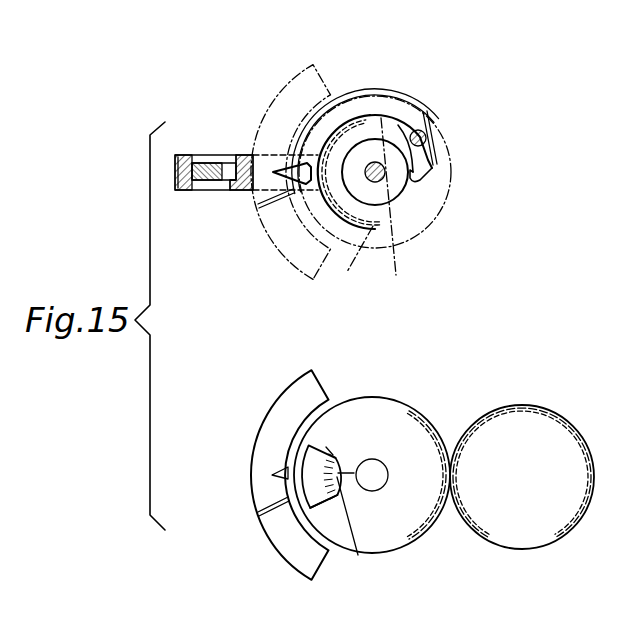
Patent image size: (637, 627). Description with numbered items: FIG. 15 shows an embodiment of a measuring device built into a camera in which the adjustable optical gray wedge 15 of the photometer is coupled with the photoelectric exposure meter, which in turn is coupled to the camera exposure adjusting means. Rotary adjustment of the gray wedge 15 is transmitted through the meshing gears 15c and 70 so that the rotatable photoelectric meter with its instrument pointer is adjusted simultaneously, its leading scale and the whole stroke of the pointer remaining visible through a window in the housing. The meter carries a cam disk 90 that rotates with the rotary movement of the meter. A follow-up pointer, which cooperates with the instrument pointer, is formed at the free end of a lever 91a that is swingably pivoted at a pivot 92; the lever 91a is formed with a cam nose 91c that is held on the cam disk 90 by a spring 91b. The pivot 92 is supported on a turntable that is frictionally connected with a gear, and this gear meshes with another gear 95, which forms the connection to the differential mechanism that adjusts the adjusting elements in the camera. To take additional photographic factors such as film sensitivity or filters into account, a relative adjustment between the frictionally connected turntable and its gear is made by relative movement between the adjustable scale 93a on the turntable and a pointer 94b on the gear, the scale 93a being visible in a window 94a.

The gray wedge 15 is at (220, 172).
The gear 15c is at (243, 150).
The gear 70 is at (353, 223).
The cam disk 90 is at (390, 206).
The lever 91a is at (361, 103).
The spring 91b is at (437, 167).
The cam nose 91c is at (422, 185).
The pivot 92 is at (425, 130).
The adjustable scale 93a is at (312, 512).
The window 94a is at (320, 446).
The pointer 94b is at (358, 556).
The gear 95 is at (528, 430).